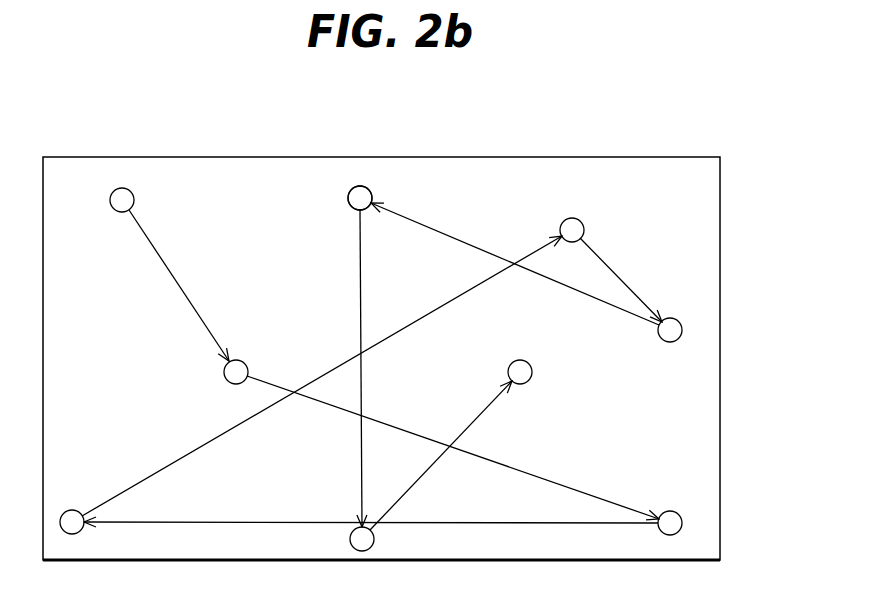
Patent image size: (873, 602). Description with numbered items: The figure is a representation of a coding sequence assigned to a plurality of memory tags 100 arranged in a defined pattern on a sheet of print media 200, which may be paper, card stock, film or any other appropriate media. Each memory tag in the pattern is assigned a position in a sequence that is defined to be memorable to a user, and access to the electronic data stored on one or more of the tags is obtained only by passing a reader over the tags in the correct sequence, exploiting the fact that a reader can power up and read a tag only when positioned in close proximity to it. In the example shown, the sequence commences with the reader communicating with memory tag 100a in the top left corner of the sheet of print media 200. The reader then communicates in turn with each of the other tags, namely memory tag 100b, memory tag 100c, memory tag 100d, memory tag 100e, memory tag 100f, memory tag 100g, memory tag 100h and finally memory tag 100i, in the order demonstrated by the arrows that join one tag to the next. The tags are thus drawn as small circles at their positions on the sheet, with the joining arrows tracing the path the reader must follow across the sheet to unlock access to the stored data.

The sheet of print media 200 is at (687, 157).
The memory tag 100 is at (361, 186).
The memory tag 100a is at (134, 200).
The memory tag 100b is at (238, 360).
The memory tag 100c is at (680, 531).
The memory tag 100d is at (78, 510).
The memory tag 100e is at (584, 232).
The memory tag 100f is at (680, 338).
The memory tag 100g is at (372, 200).
The memory tag 100h is at (350, 540).
The memory tag 100i is at (530, 380).